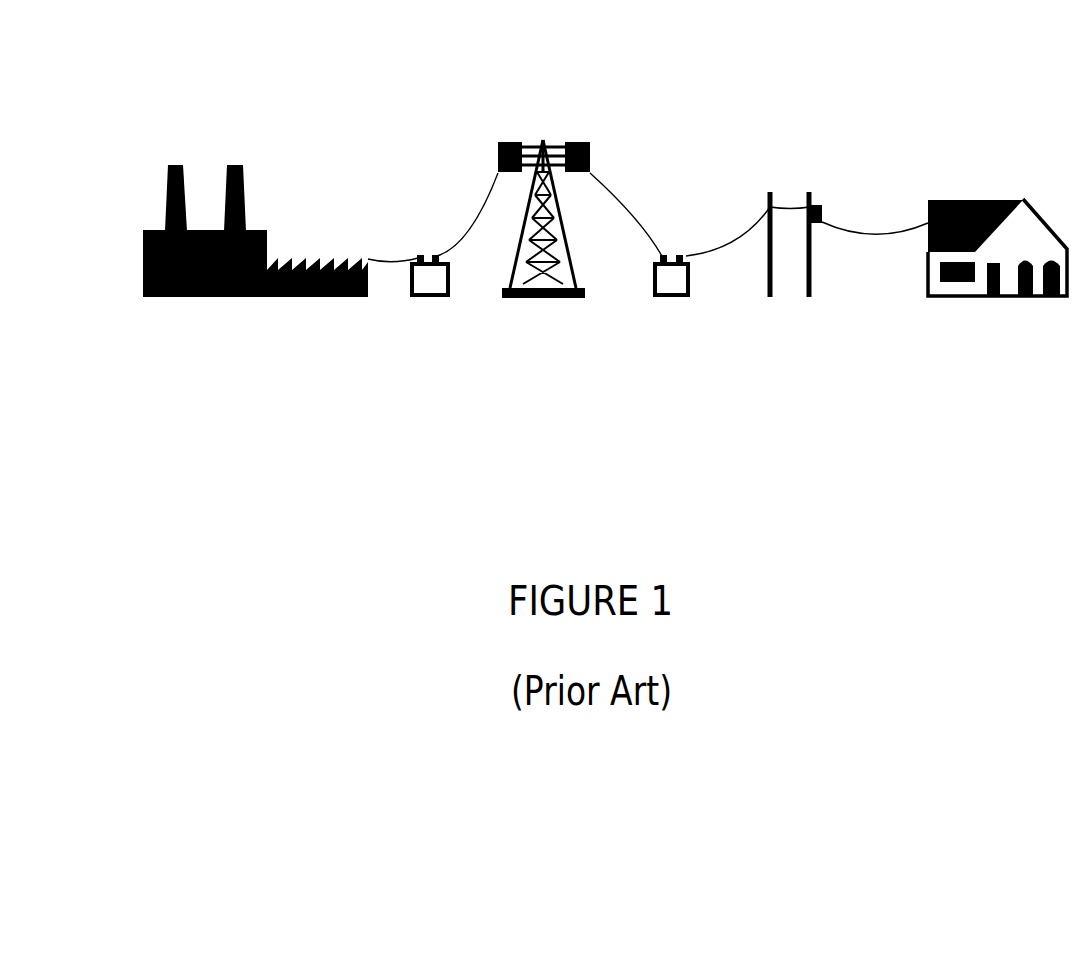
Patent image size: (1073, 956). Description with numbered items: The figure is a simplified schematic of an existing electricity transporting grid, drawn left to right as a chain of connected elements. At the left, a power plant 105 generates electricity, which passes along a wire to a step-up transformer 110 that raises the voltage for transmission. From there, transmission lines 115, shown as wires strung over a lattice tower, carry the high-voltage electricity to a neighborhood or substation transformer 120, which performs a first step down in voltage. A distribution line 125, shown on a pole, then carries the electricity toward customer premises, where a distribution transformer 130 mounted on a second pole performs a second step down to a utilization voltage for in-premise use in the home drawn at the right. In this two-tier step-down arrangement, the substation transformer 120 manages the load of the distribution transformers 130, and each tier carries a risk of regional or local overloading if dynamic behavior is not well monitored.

The power plant 105 is at (183, 327).
The step-up transformer 110 is at (423, 317).
The transmission lines 115 is at (548, 120).
The substation transformer 120 is at (673, 304).
The distribution line 125 is at (770, 184).
The distribution transformer 130 is at (822, 240).